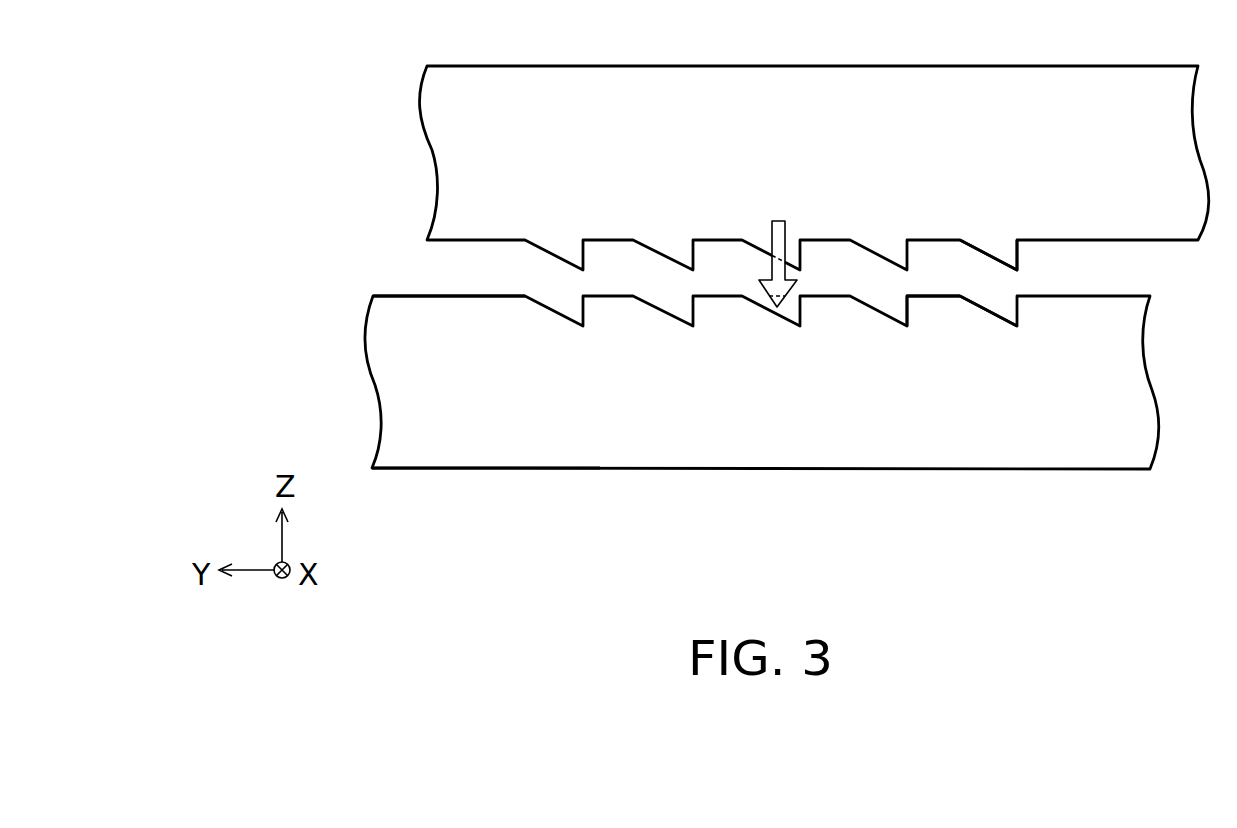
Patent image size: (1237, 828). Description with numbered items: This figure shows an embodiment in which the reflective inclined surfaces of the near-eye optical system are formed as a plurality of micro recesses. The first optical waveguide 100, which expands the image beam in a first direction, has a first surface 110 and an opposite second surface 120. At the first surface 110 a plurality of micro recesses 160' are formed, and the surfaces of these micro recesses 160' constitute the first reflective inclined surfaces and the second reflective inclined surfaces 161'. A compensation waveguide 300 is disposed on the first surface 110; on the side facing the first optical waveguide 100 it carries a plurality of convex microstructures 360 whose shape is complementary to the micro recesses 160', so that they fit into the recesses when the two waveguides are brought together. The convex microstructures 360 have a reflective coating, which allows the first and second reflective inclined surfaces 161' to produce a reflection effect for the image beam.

The compensation waveguide 300 is at (450, 155).
The first surface 110 is at (406, 282).
The first optical waveguide 100 is at (403, 380).
The second surface 120 is at (465, 473).
The convex microstructures 360 is at (1003, 252).
The second reflective inclined surfaces 161' is at (939, 329).
The micro recesses 160' is at (992, 354).